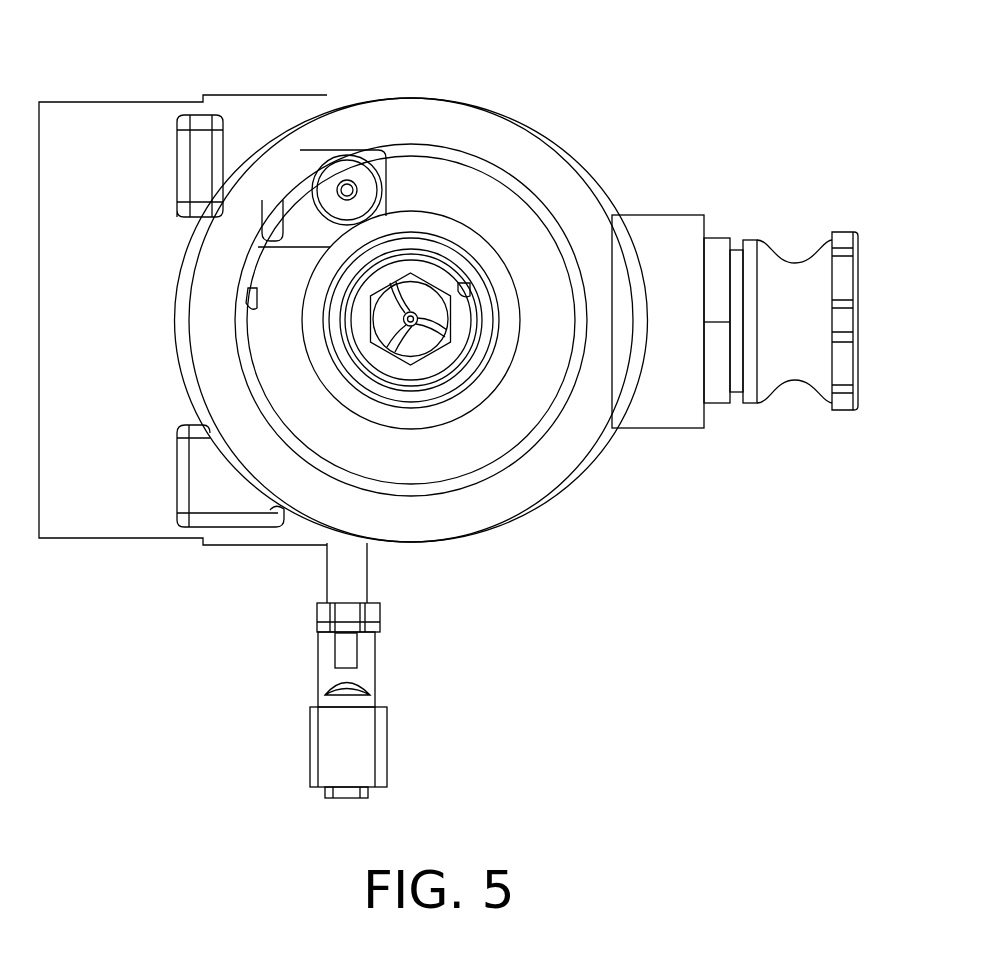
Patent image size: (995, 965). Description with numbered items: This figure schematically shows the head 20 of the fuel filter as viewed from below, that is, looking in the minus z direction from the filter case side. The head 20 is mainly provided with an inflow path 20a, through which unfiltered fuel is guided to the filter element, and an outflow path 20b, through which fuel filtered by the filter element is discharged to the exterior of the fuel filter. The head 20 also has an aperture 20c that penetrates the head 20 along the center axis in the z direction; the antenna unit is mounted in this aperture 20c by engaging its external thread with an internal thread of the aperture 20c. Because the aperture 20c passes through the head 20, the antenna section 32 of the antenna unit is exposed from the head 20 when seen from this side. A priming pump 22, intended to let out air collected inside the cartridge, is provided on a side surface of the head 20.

The head 20 is at (505, 137).
The inflow path 20a is at (253, 292).
The outflow path 20b is at (460, 288).
The aperture 20c is at (374, 136).
The antenna section 32 is at (347, 186).
The priming pump 22 is at (766, 267).